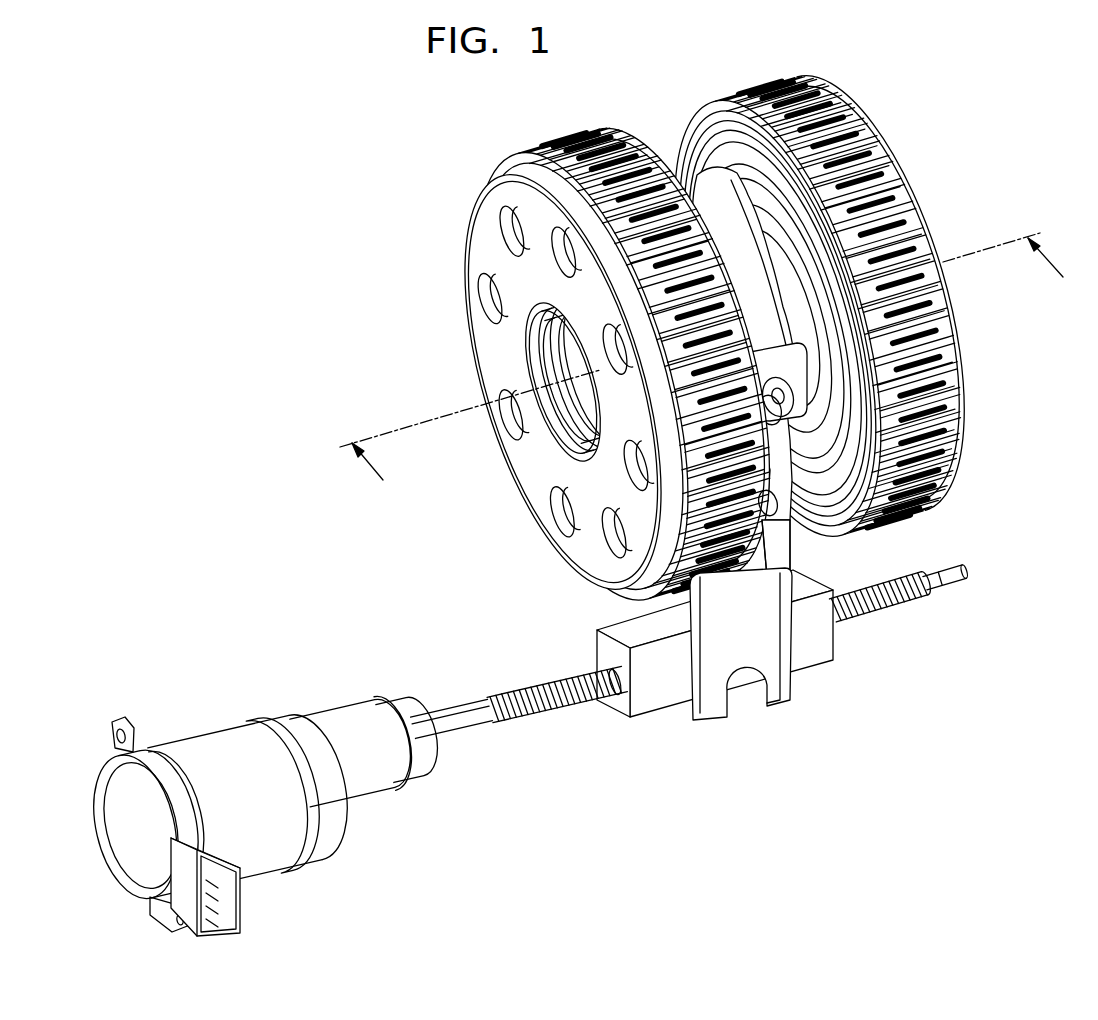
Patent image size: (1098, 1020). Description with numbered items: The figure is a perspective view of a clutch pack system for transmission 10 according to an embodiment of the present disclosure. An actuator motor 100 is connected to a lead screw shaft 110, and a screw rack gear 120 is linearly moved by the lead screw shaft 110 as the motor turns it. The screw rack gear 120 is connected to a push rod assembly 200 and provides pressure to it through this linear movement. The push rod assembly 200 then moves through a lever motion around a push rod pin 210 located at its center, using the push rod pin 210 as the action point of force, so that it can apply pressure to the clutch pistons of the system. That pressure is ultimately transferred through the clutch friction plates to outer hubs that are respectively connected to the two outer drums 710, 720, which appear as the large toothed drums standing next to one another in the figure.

The actuator assembly 10 is at (253, 288).
The actuator motor 100 is at (308, 812).
The lead screw shaft 110 is at (567, 707).
The screw rack gear 120 is at (745, 683).
The push rod assembly 200 is at (747, 223).
The push rod pin 210 is at (762, 510).
The outer drum 710 is at (546, 157).
The outer drum 720 is at (795, 83).